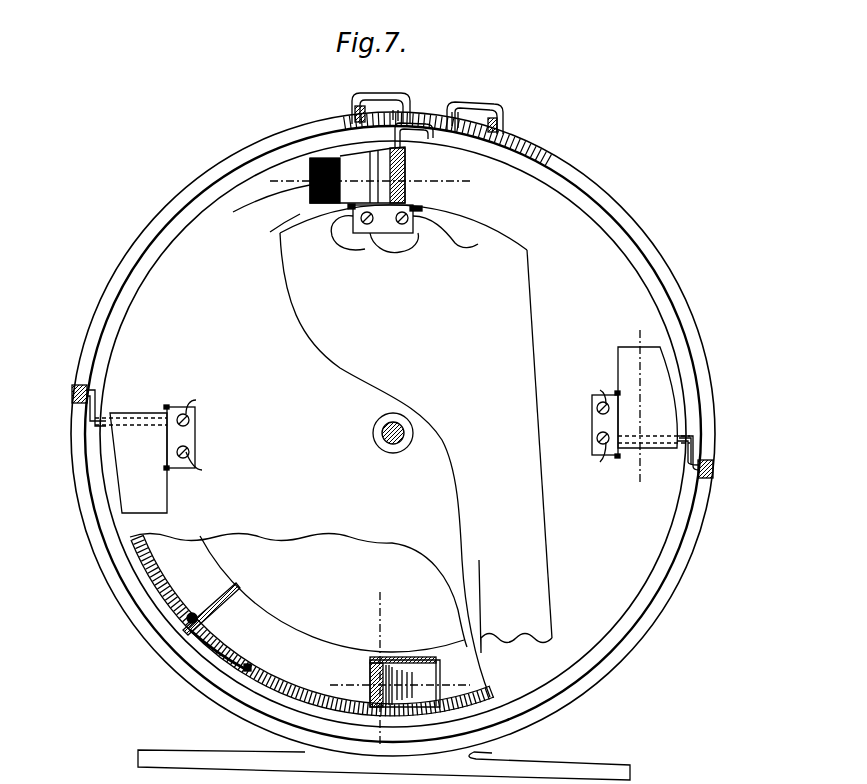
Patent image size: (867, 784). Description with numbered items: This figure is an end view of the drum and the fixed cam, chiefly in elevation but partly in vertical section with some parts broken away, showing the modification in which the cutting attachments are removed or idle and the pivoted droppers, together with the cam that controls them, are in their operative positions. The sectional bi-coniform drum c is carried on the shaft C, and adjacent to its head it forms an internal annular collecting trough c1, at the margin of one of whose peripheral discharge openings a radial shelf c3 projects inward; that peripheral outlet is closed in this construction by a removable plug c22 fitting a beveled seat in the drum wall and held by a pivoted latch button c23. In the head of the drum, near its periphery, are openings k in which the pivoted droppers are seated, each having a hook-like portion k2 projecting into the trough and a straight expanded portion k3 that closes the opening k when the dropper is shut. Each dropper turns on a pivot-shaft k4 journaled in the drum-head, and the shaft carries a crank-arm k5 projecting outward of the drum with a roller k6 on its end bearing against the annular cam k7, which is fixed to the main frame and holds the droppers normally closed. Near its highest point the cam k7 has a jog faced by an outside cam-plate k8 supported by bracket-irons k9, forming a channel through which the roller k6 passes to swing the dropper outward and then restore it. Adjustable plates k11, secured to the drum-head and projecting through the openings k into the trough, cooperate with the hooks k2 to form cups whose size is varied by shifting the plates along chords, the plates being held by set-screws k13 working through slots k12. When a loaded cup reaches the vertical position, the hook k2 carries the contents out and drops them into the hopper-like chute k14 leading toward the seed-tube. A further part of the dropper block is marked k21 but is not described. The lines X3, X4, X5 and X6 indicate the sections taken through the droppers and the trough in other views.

The opening k is at (250, 208).
The hook-like portion k2 is at (300, 205).
The straight expanded portion k3 is at (408, 190).
The pivot-shaft k4 is at (694, 440).
The crank-arm k5 is at (430, 138).
The roller k6 is at (72, 394).
The annular cam k7 is at (118, 273).
The outside cam-plate k8 is at (436, 117).
The bracket-iron k9 is at (376, 98).
The adjustable plate k11 is at (384, 236).
The slot k12 is at (345, 240).
The set-screw k13 is at (364, 226).
The hopper-like chute k14 is at (416, 451).
The block k21 is at (417, 683).
The sectional bi-coniform drum c is at (292, 370).
The shaft C is at (400, 444).
The collecting trough c1 is at (312, 625).
The radial shelf c3 is at (212, 612).
The removable plug c22 is at (248, 664).
The pivoted latch button c23 is at (252, 670).
The section line X3 is at (283, 552).
The section line X4 is at (654, 401).
The section line X5 is at (378, 181).
The section line X6 is at (389, 669).